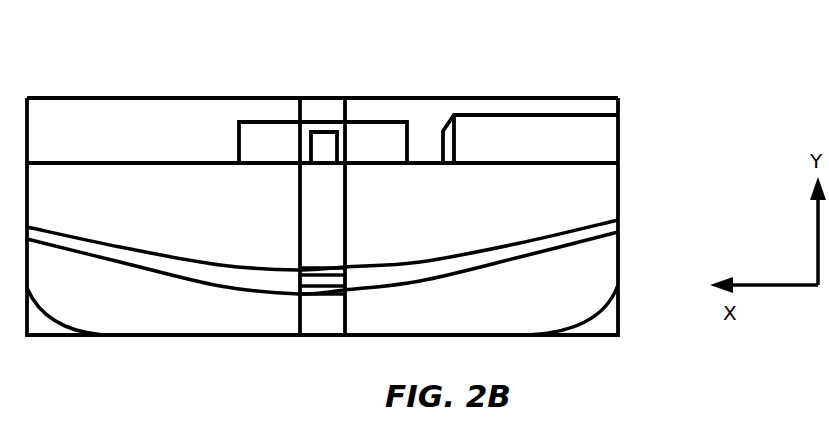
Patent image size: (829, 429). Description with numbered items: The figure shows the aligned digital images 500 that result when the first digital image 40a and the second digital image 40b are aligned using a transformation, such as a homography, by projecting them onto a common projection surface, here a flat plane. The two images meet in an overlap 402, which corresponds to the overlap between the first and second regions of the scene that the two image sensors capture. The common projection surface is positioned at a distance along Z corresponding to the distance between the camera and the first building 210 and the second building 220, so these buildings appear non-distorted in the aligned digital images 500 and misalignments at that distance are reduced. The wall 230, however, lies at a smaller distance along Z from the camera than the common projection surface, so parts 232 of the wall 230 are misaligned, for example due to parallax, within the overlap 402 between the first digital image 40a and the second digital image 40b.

The aligned digital images 500 is at (211, 67).
The first digital image 40a is at (132, 98).
The second digital image 40b is at (580, 98).
The first building 210 is at (356, 145).
The second building 220 is at (603, 150).
The overlap 402 is at (327, 203).
The wall 230 is at (592, 278).
The parts of the wall 232 is at (310, 311).